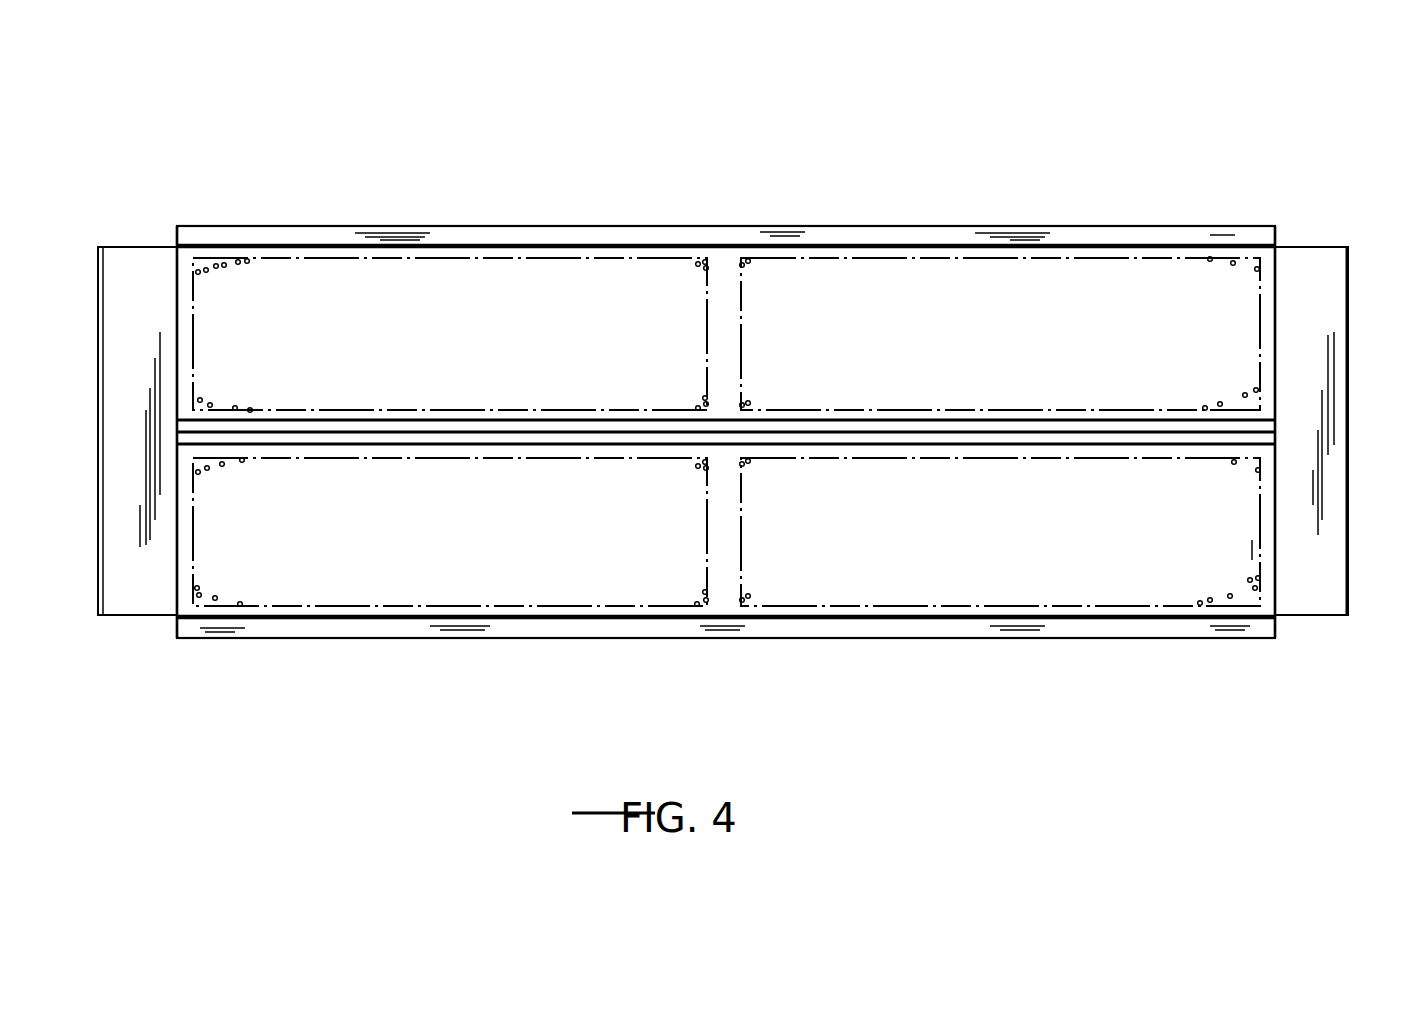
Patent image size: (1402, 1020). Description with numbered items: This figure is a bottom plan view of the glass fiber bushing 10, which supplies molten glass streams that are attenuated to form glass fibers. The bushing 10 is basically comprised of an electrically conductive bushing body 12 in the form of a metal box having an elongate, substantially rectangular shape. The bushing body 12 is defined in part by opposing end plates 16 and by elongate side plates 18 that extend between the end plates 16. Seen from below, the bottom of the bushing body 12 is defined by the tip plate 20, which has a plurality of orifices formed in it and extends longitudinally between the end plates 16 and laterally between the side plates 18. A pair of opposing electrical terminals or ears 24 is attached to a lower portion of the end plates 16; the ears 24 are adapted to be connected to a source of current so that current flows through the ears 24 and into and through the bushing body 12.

The bushing 10 is at (733, 422).
The bushing body 12 is at (1190, 210).
The end plates 16 is at (177, 300).
The side plates 18 is at (335, 245).
The tip plate 20 is at (1252, 545).
The ears 24 is at (98, 575).